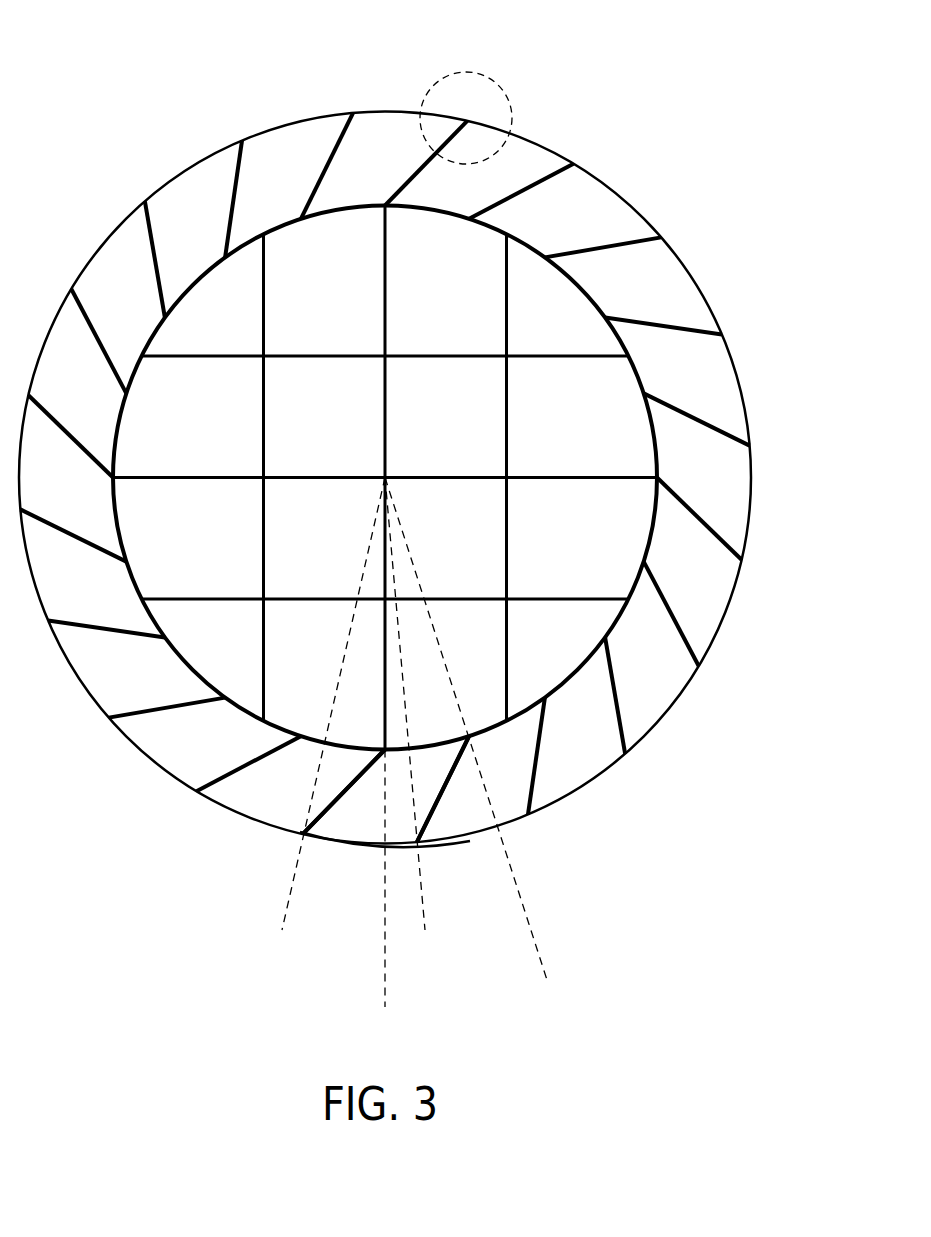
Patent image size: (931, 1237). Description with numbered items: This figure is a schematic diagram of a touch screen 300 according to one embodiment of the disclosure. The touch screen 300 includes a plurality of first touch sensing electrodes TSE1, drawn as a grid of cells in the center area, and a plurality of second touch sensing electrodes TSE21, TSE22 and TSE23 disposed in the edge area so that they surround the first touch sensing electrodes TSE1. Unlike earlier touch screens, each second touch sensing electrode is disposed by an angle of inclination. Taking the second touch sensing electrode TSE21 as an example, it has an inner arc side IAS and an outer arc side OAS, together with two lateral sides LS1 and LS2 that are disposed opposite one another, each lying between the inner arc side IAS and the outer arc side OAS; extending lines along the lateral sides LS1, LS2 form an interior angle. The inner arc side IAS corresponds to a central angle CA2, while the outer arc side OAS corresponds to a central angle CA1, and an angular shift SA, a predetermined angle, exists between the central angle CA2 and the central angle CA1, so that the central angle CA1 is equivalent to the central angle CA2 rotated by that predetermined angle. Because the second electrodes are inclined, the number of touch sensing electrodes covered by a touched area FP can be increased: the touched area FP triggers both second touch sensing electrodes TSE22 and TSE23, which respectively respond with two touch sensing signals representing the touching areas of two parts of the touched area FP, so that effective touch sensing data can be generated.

The touch screen 300 is at (690, 935).
The first touch sensing electrodes TSE1 is at (385, 478).
The second touch sensing electrode TSE21 is at (332, 828).
The second touch sensing electrode TSE22 is at (386, 125).
The second touch sensing electrode TSE23 is at (527, 157).
The touched area FP is at (492, 78).
The lateral side LS1 is at (325, 803).
The lateral side LS2 is at (433, 810).
The inner arc side IAS is at (442, 745).
The outer arc side OAS is at (350, 842).
The central angle CA1 is at (426, 936).
The central angle CA2 is at (547, 977).
The angular shift SA is at (527, 915).